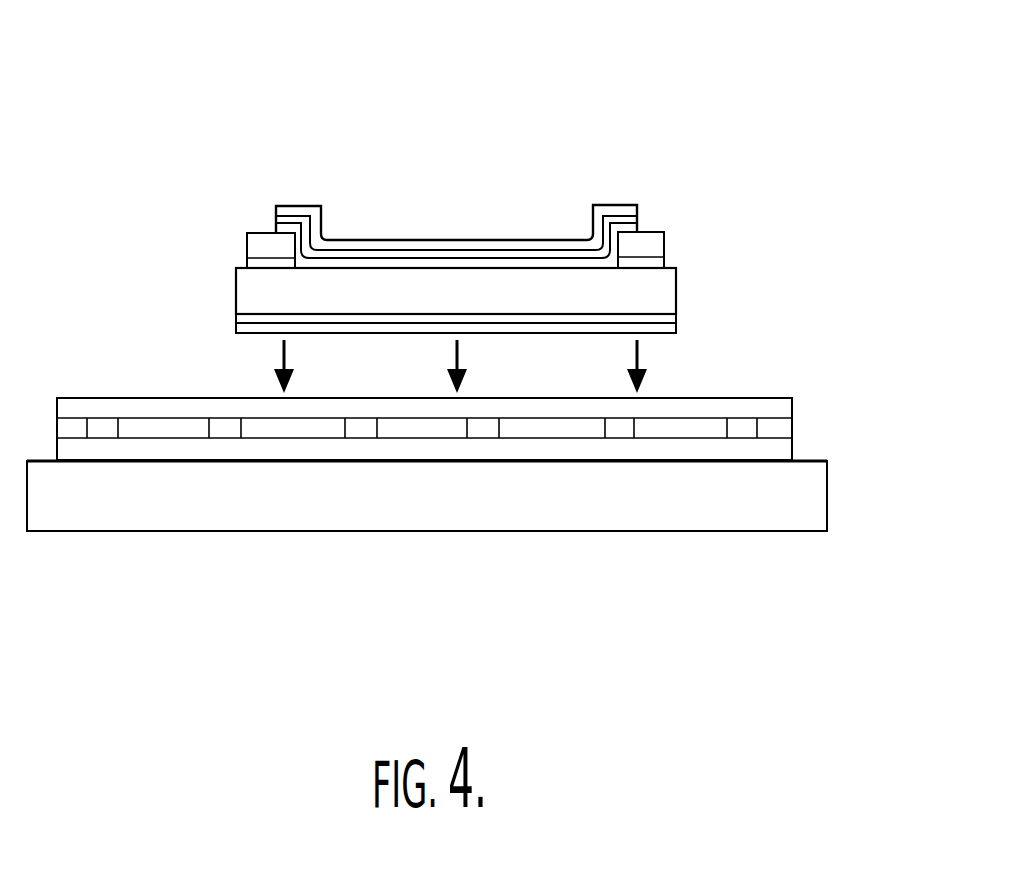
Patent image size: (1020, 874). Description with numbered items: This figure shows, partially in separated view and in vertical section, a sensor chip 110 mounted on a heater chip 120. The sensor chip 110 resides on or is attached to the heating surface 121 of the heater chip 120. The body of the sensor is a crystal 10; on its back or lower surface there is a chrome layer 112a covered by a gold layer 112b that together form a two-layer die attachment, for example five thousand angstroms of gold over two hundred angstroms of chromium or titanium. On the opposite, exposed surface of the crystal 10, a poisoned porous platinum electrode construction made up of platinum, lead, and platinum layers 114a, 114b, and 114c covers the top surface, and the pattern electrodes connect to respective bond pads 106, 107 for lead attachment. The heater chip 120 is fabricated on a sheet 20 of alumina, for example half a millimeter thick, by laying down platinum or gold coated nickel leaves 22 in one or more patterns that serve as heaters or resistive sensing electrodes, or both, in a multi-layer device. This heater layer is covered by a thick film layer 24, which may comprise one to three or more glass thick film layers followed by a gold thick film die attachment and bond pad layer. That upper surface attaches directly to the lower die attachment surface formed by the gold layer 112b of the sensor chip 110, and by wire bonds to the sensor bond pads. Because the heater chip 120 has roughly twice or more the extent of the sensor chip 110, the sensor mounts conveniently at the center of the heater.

The crystal 10 is at (450, 309).
The sheet of alumina 20 is at (448, 515).
The platinum or gold coated nickel leaves 22 is at (103, 428).
The thick film layer 24 is at (140, 407).
The bond pad 106 is at (650, 232).
The bond pad 107 is at (262, 247).
The sensor chip 110 is at (714, 236).
The chrome layer 112a is at (675, 318).
The gold layer 112b is at (676, 327).
The platinum layer 114a is at (645, 231).
The lead layer 114b is at (640, 228).
The platinum layer 114c is at (598, 205).
The heater chip 120 is at (825, 395).
The heating surface 121 is at (702, 398).